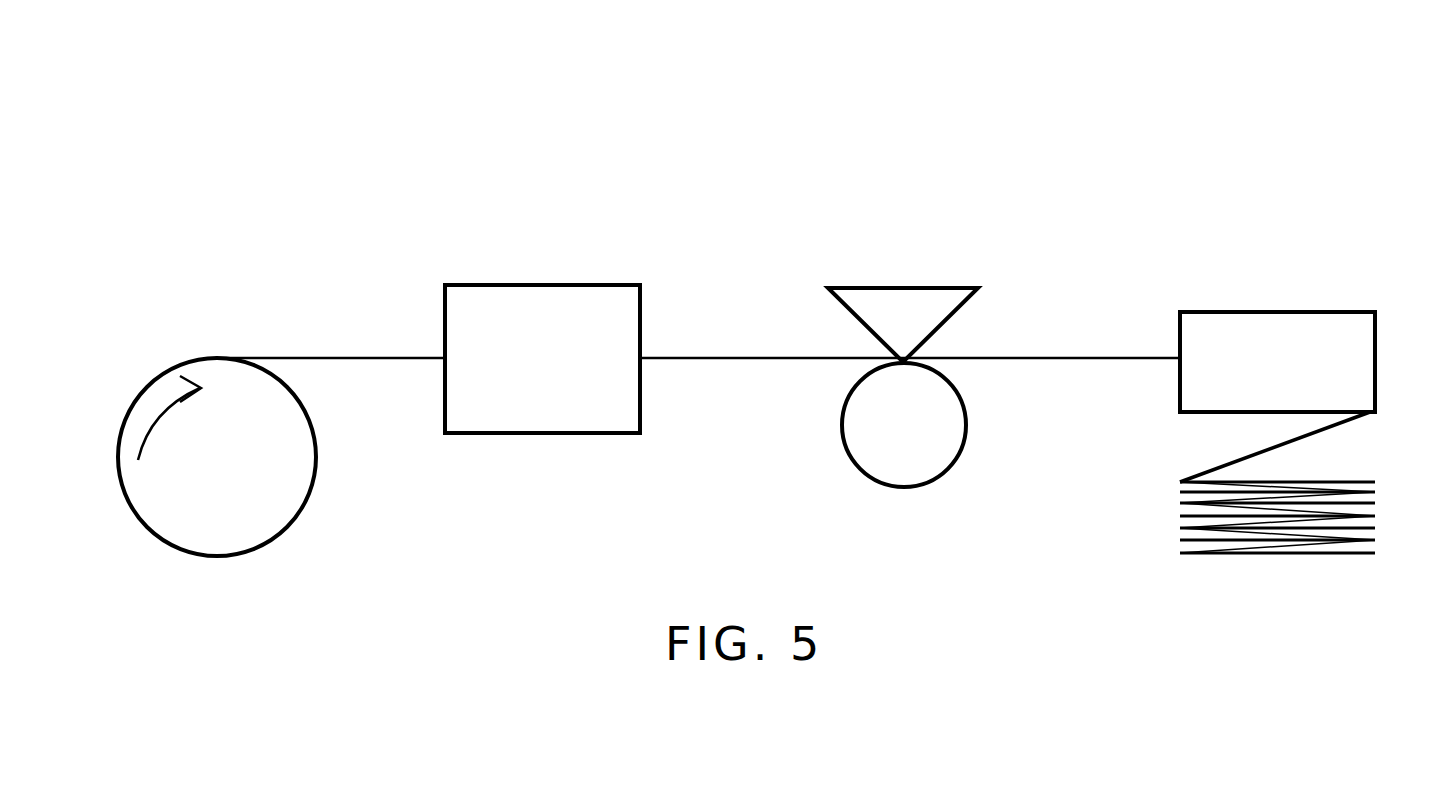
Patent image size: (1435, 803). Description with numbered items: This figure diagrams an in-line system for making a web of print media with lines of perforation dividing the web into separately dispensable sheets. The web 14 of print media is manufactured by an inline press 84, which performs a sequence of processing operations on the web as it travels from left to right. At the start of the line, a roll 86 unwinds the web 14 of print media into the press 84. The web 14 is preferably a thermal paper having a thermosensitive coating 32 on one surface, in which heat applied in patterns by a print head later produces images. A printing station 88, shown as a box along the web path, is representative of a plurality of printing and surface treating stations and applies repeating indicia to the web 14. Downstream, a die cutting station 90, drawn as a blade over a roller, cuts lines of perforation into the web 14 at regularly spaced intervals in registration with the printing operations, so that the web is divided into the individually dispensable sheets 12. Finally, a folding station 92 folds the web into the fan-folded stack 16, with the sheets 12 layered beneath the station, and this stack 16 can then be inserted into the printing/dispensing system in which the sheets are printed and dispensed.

The inline press 84 is at (356, 116).
The roll 86 is at (270, 533).
The web of print media 14 is at (348, 341).
The printing station 88 is at (576, 381).
The thermosensitive coating 32 is at (750, 360).
The die cutting station 90 is at (902, 284).
The folding station 92 is at (1306, 381).
The sheets 12 is at (1248, 455).
The fan-folded stack 16 is at (1376, 512).